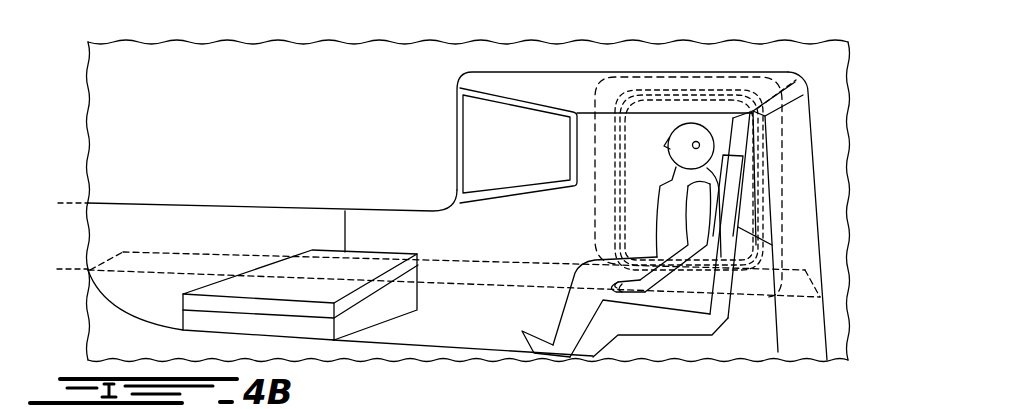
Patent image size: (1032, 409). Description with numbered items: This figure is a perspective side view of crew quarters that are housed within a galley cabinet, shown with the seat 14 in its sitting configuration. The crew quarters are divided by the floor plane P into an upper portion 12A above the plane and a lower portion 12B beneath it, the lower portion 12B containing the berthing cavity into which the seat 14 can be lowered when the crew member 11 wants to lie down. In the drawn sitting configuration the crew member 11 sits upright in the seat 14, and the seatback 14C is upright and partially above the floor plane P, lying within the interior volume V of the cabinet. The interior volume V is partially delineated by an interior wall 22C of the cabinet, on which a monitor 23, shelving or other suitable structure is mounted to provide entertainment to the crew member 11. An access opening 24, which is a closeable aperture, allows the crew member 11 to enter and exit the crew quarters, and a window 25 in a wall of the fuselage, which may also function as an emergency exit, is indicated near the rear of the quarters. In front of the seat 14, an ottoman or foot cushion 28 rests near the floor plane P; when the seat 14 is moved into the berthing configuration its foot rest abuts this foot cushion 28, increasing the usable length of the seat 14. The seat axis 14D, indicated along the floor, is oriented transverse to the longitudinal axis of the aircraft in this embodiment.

The crew member 11 is at (686, 130).
The upper portion 12A is at (783, 160).
The lower portion 12B is at (147, 216).
The seat 14 is at (752, 218).
The seatback 14C is at (732, 203).
The seat axis 14D is at (72, 272).
The interior wall 22C is at (460, 127).
The monitor 23 is at (505, 128).
The access opening 24 is at (727, 106).
The window 25 is at (753, 111).
The foot cushion 28 is at (323, 253).
The interior volume V is at (635, 95).
The floor plane P is at (72, 202).